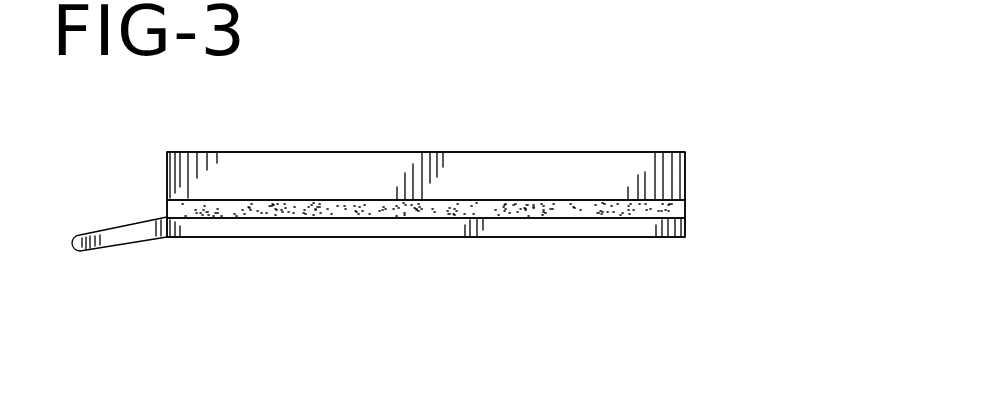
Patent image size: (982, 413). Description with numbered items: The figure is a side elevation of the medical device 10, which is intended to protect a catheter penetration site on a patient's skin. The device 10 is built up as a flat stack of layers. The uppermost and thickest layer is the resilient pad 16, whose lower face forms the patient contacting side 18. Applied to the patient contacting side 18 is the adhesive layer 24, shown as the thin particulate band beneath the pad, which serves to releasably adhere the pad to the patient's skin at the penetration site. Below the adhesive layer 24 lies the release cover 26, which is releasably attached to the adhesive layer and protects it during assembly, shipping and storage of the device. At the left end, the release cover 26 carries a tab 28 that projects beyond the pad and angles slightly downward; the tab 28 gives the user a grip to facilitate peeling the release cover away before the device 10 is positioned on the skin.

The medical device 10 is at (588, 120).
The resilient pad 16 is at (676, 175).
The patient contacting side 18 is at (673, 208).
The adhesive layer 24 is at (498, 208).
The release cover 26 is at (677, 233).
The tab 28 is at (87, 252).